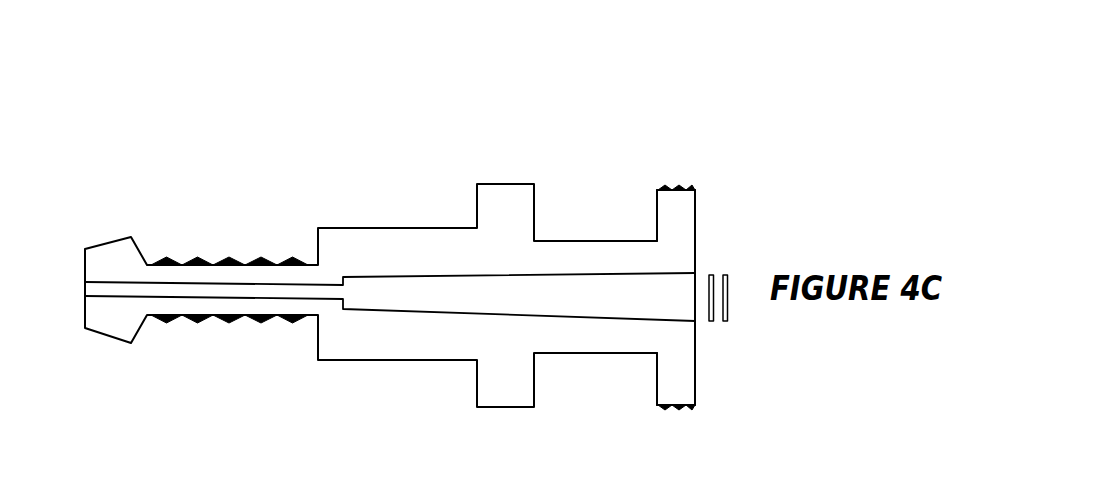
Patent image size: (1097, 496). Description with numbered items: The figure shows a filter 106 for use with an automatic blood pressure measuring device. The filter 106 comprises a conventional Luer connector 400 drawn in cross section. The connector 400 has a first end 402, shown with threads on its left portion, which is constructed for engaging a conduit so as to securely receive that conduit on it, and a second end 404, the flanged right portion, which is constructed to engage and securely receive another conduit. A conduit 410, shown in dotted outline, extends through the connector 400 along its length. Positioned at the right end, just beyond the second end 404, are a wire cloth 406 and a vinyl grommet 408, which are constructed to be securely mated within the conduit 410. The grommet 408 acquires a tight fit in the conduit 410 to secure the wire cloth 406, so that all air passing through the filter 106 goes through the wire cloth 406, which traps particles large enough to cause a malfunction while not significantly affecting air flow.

The filter 106 is at (376, 163).
The Luer connector 400 is at (390, 360).
The first end 402 is at (215, 262).
The second end 404 is at (682, 190).
The wire cloth 406 is at (712, 322).
The vinyl grommet 408 is at (727, 275).
The conduit 410 is at (159, 302).